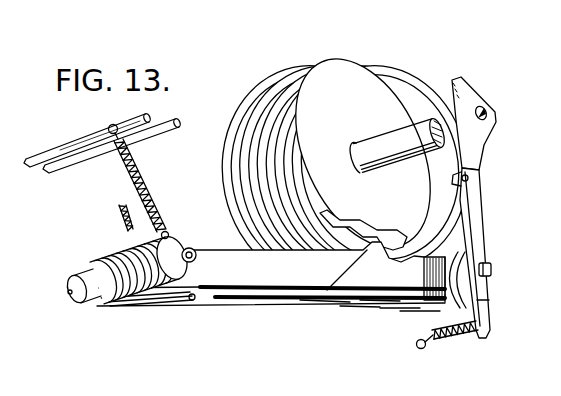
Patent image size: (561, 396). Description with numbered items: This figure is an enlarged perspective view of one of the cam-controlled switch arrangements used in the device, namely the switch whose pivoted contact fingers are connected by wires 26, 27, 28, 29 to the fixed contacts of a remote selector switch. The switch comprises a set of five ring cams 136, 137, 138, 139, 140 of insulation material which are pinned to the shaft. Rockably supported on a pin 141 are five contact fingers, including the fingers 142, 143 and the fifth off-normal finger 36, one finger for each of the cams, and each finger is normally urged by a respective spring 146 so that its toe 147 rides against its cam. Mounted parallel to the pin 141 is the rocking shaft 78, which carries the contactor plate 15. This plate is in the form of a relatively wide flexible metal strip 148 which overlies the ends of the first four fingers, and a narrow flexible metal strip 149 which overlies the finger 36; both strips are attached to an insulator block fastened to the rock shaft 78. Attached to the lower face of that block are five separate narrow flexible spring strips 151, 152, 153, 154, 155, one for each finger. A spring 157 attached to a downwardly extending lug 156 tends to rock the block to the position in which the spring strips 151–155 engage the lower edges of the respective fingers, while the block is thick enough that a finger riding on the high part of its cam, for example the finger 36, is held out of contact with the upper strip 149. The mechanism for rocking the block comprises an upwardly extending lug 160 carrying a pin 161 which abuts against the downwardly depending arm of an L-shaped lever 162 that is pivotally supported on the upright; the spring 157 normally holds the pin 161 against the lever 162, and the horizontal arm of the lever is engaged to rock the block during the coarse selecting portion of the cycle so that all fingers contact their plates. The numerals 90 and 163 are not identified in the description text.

The contactor plate 15 is at (448, 240).
The wire 26 is at (155, 312).
The wire 27 is at (163, 312).
The wire 28 is at (173, 310).
The wire 29 is at (192, 302).
The cam-controlled contact finger 36 is at (268, 280).
The rocking shaft 78 is at (492, 270).
The drum 90 is at (415, 92).
The ring cam 136 is at (260, 88).
The ring cam 137 is at (267, 80).
The ring cam 138 is at (292, 74).
The ring cam 139 is at (310, 63).
The ring cam 140 is at (315, 63).
The pin 141 is at (190, 249).
The contact finger 142 is at (97, 268).
The contact finger 143 is at (103, 297).
The spring 146 is at (122, 156).
The toe 147 is at (327, 290).
The wide flexible metal strip 148 is at (403, 257).
The narrow flexible metal strip 149 is at (433, 262).
The spring strip 151 is at (356, 303).
The spring strip 152 is at (357, 316).
The spring strip 153 is at (388, 301).
The spring strip 154 is at (395, 315).
The spring strip 155 is at (412, 312).
The lug 156 is at (487, 307).
The spring 157 is at (455, 336).
The lug 160 is at (470, 195).
The pin 161 is at (469, 177).
The L-shaped lever 162 is at (482, 135).
The hole 163 is at (487, 113).